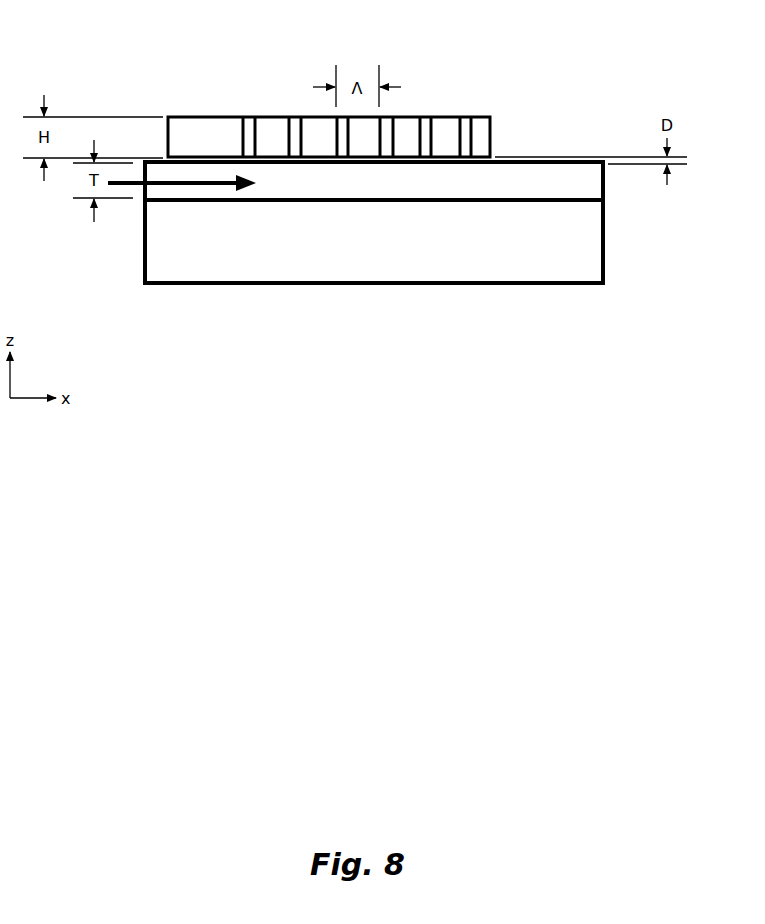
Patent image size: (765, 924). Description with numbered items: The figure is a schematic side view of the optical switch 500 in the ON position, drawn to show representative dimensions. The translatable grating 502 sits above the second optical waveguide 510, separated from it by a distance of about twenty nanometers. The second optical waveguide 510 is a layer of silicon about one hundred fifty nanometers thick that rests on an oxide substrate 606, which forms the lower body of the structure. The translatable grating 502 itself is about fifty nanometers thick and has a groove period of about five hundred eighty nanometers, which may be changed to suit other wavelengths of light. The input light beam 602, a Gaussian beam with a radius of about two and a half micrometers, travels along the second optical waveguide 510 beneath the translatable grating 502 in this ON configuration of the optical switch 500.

The optical switch 500 is at (590, 30).
The translatable grating 502 is at (482, 50).
The second optical waveguide 510 is at (603, 183).
The input light beam 602 is at (198, 185).
The oxide substrate 606 is at (603, 240).